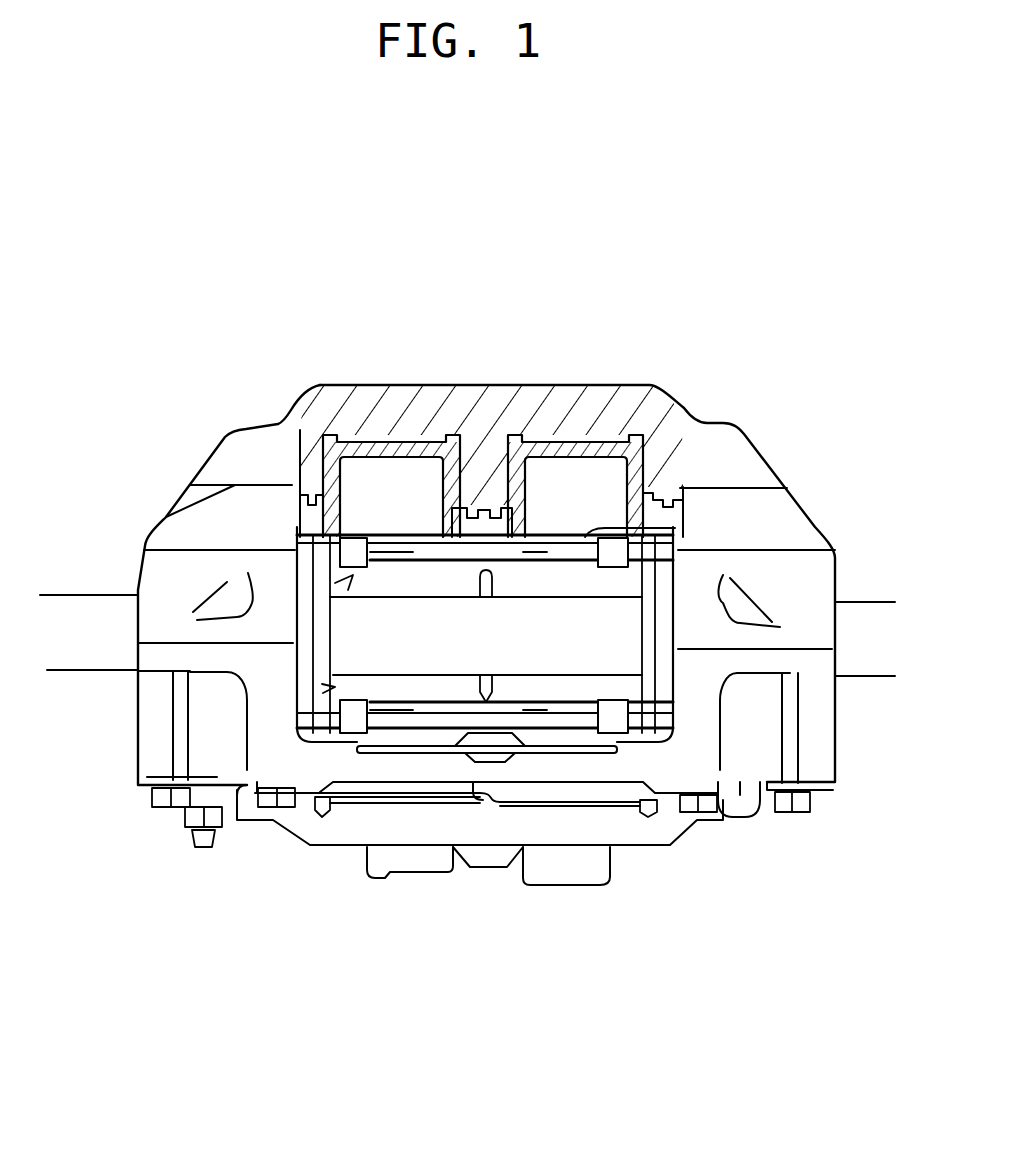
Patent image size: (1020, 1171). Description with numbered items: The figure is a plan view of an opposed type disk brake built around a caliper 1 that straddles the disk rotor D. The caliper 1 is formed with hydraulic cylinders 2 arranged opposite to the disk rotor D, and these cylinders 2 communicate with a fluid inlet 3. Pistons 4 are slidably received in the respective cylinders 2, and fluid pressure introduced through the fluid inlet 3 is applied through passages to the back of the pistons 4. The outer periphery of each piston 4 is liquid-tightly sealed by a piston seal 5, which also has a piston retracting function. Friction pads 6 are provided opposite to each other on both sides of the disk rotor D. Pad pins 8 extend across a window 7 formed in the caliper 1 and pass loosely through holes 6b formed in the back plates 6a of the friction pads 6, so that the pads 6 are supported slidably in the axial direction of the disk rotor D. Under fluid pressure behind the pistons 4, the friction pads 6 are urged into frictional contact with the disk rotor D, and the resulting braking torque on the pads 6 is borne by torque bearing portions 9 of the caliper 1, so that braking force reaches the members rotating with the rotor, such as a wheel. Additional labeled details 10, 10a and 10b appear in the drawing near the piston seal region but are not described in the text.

The caliper 1 is at (768, 515).
The hydraulic cylinders 2 is at (520, 435).
The fluid inlet 3 is at (421, 877).
The pistons 4 is at (580, 455).
The piston seal 5 is at (668, 505).
The friction pads 6 is at (335, 687).
The back plates 6a is at (392, 745).
The holes 6b is at (672, 705).
The window 7 is at (618, 623).
The pad pins 8 is at (650, 715).
The torque bearing portions 9 is at (833, 778).
The seal 10 is at (680, 528).
The piston seal 10a is at (413, 535).
The dust seal 10b is at (317, 500).
The disk rotor D is at (876, 602).